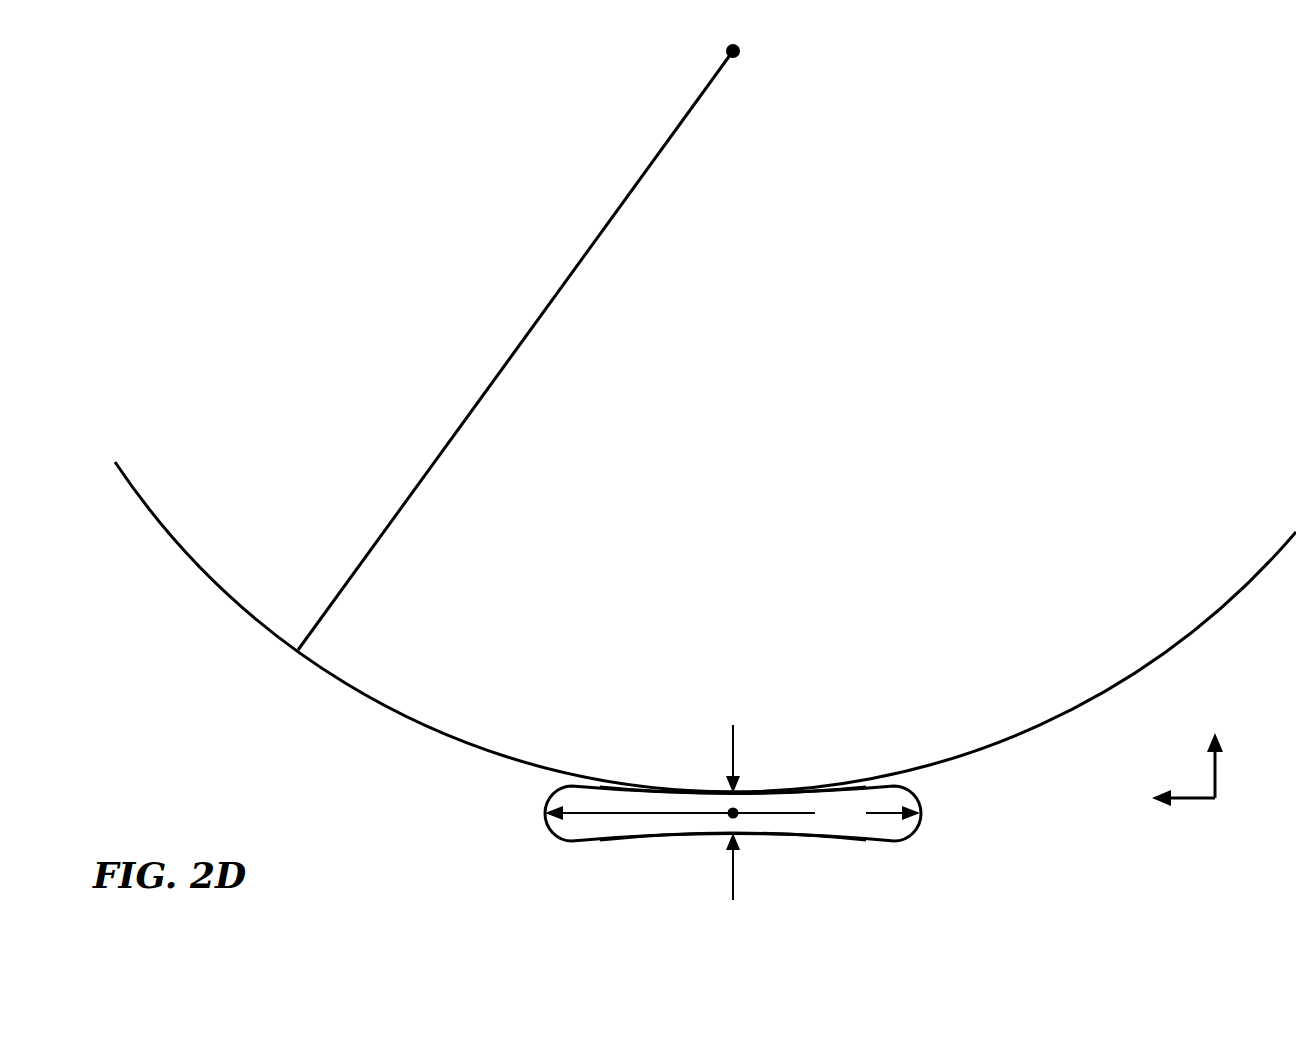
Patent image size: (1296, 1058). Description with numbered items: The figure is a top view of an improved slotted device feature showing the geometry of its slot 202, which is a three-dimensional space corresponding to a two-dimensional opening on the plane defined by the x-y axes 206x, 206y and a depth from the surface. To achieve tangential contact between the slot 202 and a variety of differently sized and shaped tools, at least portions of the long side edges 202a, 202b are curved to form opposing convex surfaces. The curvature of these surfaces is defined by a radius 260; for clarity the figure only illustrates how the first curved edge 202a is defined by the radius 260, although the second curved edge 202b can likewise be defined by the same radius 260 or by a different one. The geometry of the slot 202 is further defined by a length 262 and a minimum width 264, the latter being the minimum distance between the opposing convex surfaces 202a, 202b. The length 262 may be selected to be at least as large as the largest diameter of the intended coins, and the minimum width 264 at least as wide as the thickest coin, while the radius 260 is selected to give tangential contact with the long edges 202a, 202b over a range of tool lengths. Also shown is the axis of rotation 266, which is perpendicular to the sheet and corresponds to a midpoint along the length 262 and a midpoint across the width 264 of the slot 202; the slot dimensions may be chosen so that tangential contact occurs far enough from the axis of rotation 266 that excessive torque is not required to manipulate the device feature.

The radius 260 is at (448, 445).
The slot 202 is at (793, 788).
The first curved edge 202a is at (688, 788).
The second curved edge 202b is at (640, 838).
The length 262 is at (732, 813).
The minimum width 264 is at (735, 740).
The axis of rotation 266 is at (737, 817).
The x-axis 206x is at (1213, 750).
The y-axis 206y is at (1151, 799).